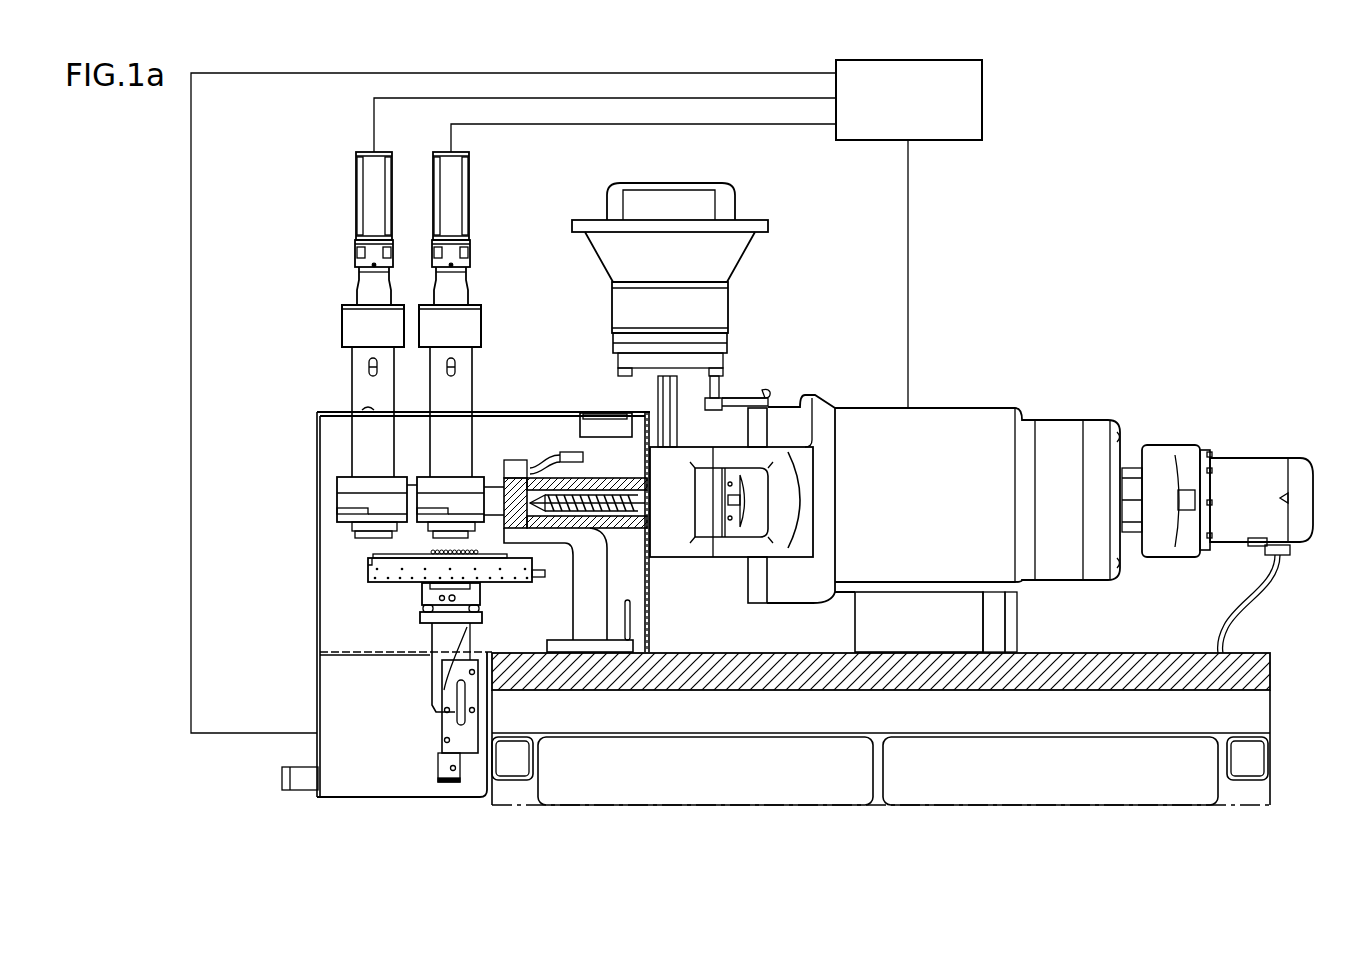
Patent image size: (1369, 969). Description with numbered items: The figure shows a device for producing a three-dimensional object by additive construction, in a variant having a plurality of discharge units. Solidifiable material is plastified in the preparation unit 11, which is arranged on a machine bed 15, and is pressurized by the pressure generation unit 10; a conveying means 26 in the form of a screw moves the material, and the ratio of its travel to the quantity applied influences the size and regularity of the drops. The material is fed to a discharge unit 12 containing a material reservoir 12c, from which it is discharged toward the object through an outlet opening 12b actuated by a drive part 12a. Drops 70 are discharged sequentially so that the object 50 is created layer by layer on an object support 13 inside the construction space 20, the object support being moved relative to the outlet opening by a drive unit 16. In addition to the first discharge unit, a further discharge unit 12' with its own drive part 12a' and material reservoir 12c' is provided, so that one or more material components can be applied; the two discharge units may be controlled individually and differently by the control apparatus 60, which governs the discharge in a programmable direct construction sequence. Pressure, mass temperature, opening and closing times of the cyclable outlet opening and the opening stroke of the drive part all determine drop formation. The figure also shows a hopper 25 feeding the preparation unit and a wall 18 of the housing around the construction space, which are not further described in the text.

The pressure generation unit 10 is at (951, 407).
The preparation unit 11 is at (570, 472).
The discharge unit 12 is at (477, 293).
The further discharge unit 12' is at (338, 293).
The drive part 12a is at (493, 194).
The drive part 12a' is at (333, 187).
The outlet opening 12b is at (463, 550).
The material reservoir 12c is at (463, 441).
The material reservoir 12c' is at (336, 448).
The object support 13 is at (421, 595).
The machine bed 15 is at (1252, 668).
The drive unit 16 is at (440, 752).
The housing wall 18 is at (648, 620).
The construction space 20 is at (318, 461).
The hopper 25 is at (605, 425).
The conveying means 26 is at (622, 530).
The object 50 is at (375, 560).
The control apparatus 60 is at (921, 111).
The drops 70 is at (426, 551).